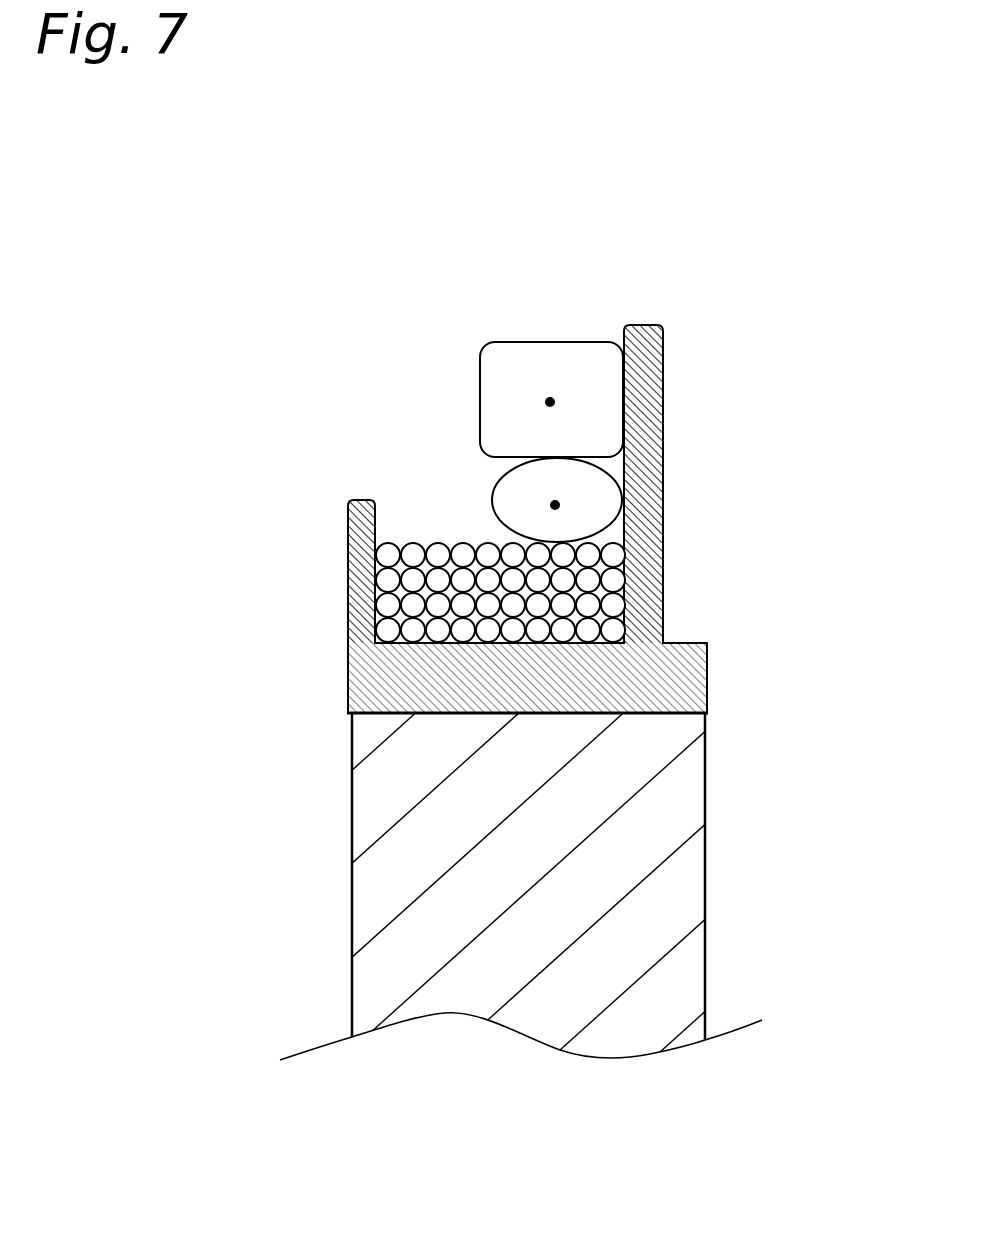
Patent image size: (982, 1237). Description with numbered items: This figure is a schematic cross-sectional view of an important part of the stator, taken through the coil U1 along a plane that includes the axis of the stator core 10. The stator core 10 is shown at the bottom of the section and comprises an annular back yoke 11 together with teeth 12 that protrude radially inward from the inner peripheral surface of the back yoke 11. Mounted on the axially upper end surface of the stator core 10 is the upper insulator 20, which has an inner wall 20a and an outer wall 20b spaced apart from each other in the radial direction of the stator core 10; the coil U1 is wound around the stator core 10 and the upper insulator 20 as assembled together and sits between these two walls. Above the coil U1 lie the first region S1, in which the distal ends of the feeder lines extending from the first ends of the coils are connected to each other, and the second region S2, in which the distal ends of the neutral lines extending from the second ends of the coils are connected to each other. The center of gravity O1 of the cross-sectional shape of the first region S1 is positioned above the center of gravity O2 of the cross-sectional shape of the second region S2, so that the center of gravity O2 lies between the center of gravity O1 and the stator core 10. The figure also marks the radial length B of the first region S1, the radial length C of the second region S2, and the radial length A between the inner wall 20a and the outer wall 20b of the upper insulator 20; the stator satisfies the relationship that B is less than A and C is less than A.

The stator core 10 is at (598, 712).
The back yoke 11 is at (672, 872).
The teeth 12 is at (375, 903).
The upper insulator 20 is at (522, 519).
The inner wall 20a is at (352, 603).
The outer wall 20b is at (650, 488).
The coil U1 is at (590, 603).
The first region S1 is at (548, 340).
The second region S2 is at (500, 487).
The center of gravity of the first region O1 is at (550, 402).
The center of gravity of the second region O2 is at (555, 505).
The radial length between the inner wall and the outer wall A is at (373, 500).
The radial length of the first region B is at (478, 457).
The radial length of the second region C is at (493, 480).